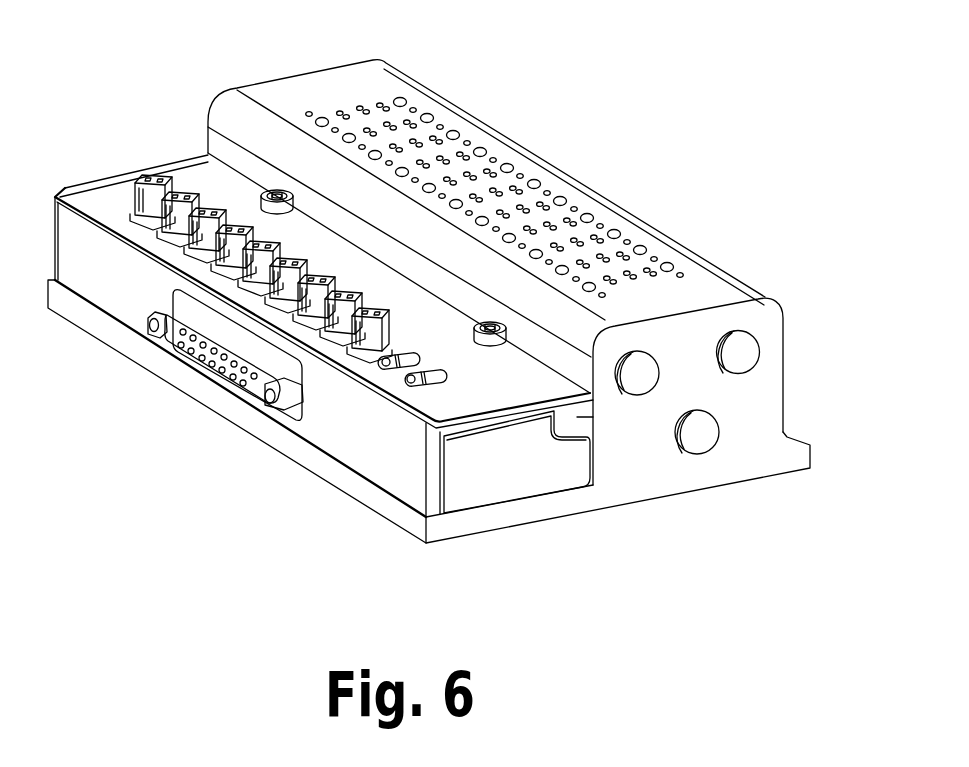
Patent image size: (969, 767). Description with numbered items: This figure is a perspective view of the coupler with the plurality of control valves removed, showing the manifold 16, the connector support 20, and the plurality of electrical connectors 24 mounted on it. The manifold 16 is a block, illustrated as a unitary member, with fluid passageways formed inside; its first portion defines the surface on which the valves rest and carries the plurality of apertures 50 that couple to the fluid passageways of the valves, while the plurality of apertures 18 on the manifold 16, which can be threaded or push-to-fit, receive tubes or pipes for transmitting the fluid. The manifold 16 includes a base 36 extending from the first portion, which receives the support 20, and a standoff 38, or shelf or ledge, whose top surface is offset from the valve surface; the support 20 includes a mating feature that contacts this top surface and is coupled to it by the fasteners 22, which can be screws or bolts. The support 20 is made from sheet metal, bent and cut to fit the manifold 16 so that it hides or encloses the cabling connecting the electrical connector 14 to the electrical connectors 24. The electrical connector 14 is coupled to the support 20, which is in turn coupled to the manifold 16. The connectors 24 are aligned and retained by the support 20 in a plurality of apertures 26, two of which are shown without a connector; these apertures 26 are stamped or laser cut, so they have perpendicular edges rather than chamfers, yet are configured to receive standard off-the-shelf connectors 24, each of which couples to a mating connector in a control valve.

The electrical connector 14 is at (207, 357).
The manifold 16 is at (772, 460).
The apertures 18 is at (700, 427).
The support 20 is at (110, 285).
The fasteners 22 is at (488, 323).
The electrical connectors 24 is at (200, 192).
The apertures 26 is at (403, 383).
The base 36 is at (533, 513).
The standoff 38 is at (580, 417).
The apertures 50 is at (428, 113).